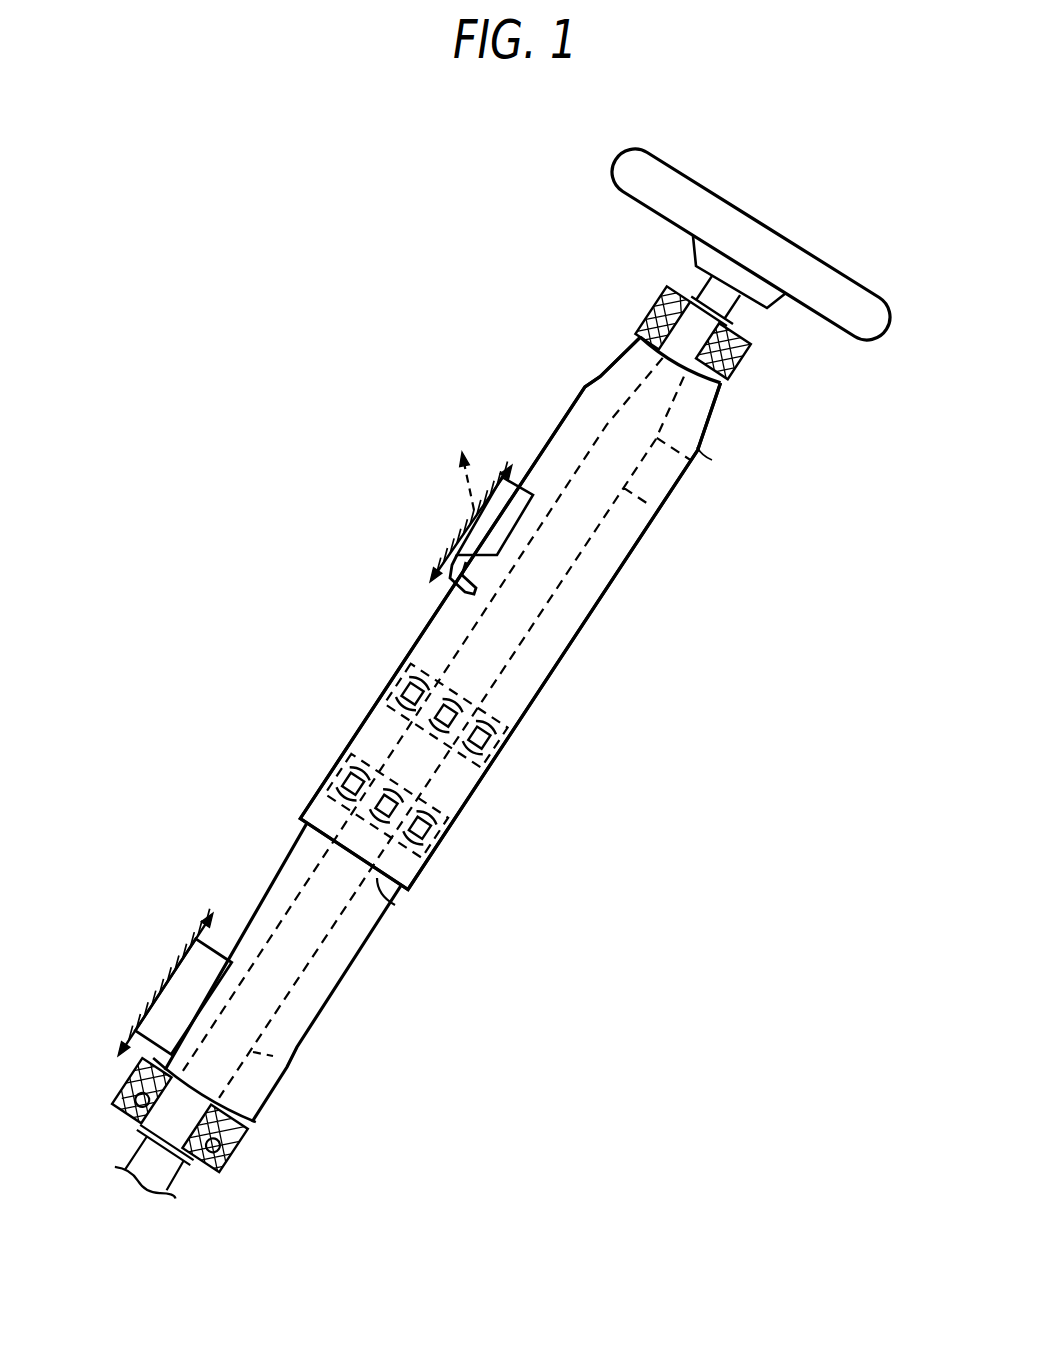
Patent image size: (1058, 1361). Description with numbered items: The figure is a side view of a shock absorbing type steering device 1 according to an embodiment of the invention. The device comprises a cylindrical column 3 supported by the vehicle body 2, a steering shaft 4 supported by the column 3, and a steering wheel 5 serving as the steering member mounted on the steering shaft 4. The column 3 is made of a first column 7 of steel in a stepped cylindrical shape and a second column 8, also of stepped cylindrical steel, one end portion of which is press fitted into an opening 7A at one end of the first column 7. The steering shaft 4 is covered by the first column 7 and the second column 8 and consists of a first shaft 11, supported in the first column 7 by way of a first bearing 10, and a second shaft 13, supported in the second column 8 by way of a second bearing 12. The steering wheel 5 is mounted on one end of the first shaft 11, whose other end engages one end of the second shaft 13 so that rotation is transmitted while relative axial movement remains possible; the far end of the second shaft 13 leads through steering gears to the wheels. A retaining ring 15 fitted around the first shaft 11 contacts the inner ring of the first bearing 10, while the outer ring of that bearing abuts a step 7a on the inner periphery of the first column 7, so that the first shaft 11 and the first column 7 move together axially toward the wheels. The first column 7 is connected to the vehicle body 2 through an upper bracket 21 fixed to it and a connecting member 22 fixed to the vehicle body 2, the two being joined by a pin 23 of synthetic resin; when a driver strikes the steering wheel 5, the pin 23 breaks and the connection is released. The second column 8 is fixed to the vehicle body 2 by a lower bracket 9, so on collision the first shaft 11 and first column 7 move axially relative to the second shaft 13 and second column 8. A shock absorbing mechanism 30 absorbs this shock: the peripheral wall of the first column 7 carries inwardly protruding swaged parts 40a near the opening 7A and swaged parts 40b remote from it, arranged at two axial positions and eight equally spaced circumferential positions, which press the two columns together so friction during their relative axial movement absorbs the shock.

The shock absorbing type steering device 1 is at (781, 218).
The vehicle body 2 is at (462, 508).
The column 3 is at (614, 582).
The steering shaft 4 is at (650, 505).
The steering wheel 5 is at (848, 326).
The first column 7 is at (565, 632).
The step 7a is at (662, 300).
The opening 7A is at (395, 905).
The second column 8 is at (322, 984).
The lower bracket 9 is at (220, 924).
The first bearing 10 is at (736, 362).
The first shaft 11 is at (712, 460).
The second bearing 12 is at (240, 1148).
The second shaft 13 is at (296, 1062).
The retaining ring 15 is at (718, 304).
The upper bracket 21 is at (533, 492).
The connecting member 22 is at (460, 528).
The pin 23 is at (455, 463).
The shock absorbing mechanism 30 is at (437, 845).
The swaged parts 40a is at (352, 782).
The swaged parts 40b is at (410, 690).